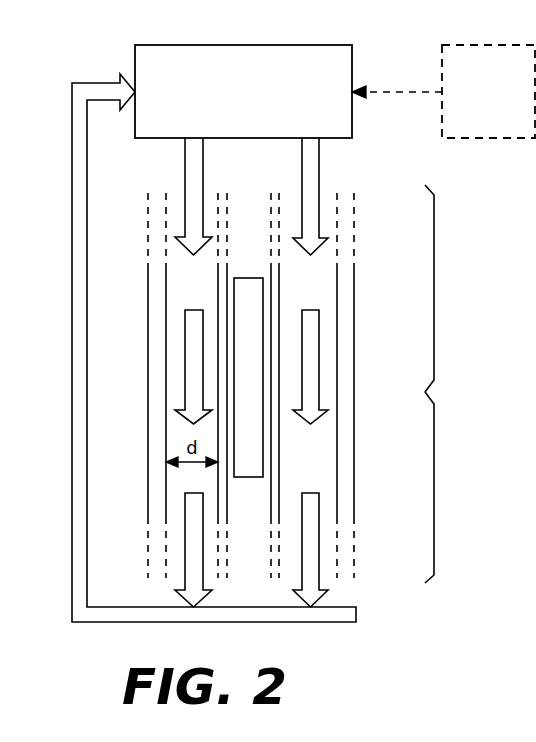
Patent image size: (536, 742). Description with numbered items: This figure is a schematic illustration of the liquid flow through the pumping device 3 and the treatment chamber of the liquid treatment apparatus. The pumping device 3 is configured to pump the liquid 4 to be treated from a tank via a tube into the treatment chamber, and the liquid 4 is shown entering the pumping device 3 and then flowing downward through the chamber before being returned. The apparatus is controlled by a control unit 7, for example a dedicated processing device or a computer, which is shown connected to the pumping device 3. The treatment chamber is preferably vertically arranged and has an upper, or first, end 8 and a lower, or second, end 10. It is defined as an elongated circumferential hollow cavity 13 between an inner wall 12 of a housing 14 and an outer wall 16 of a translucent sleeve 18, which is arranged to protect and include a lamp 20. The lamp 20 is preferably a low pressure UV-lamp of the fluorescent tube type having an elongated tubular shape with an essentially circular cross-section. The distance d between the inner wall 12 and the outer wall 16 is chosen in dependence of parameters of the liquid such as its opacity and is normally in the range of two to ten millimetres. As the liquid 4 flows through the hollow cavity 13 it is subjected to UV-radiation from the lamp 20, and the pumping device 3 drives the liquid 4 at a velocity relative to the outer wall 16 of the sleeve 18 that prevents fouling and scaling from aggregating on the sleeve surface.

The pumping device 3 is at (243, 91).
The control unit 7 is at (443, 91).
The liquid 4 is at (189, 172).
The upper end 8 is at (434, 289).
The lower end 10 is at (434, 499).
The inner wall 12 is at (337, 365).
The hollow cavity 13 is at (180, 428).
The housing 14 is at (161, 342).
The outer wall 16 is at (279, 439).
The translucent sleeve 18 is at (226, 300).
The lamp 20 is at (248, 377).